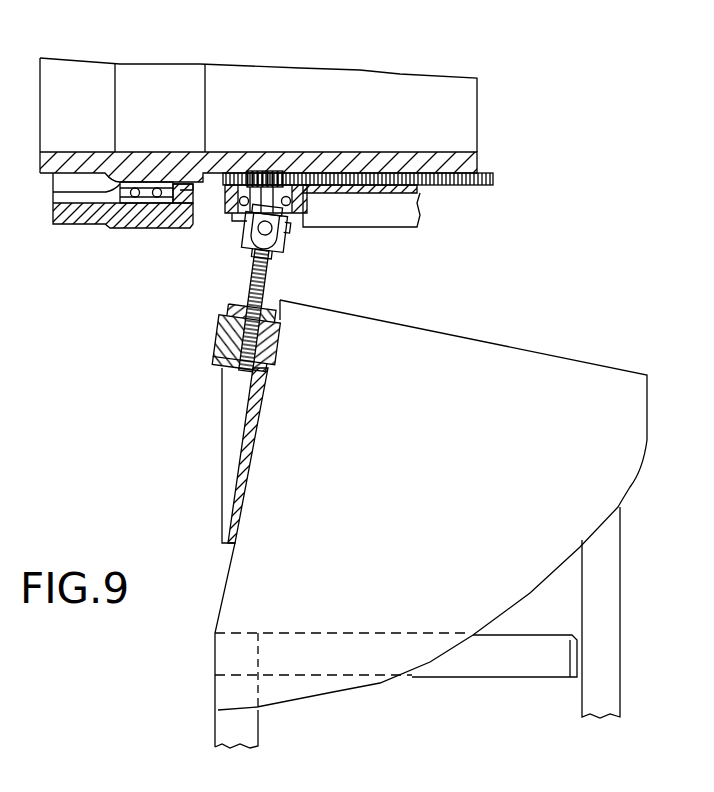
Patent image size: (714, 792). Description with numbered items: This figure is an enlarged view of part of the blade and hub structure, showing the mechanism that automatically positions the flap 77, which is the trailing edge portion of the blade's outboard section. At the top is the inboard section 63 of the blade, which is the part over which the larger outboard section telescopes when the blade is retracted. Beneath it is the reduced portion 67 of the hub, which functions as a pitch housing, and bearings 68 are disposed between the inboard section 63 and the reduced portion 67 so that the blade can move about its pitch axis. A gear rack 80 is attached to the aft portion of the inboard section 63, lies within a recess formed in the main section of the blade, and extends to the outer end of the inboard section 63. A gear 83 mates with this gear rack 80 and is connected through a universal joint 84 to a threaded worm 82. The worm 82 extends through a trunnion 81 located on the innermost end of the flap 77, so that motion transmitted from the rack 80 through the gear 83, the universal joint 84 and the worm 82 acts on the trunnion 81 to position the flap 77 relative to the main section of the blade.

The inboard section 63 is at (475, 165).
The reduced portion 67 is at (85, 228).
The bearings 68 is at (120, 182).
The flap 77 is at (430, 472).
The gear rack 80 is at (473, 186).
The trunnion 81 is at (217, 331).
The threaded worm 82 is at (237, 369).
The gear 83 is at (263, 182).
The universal joint 84 is at (280, 230).